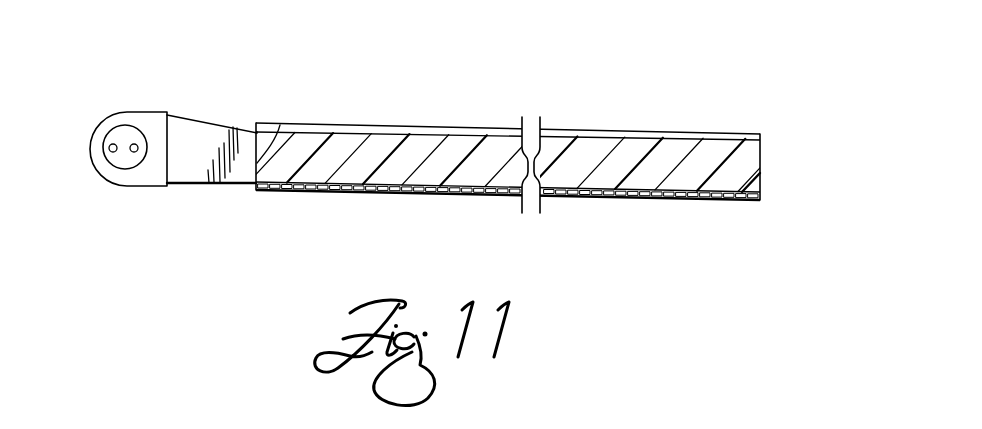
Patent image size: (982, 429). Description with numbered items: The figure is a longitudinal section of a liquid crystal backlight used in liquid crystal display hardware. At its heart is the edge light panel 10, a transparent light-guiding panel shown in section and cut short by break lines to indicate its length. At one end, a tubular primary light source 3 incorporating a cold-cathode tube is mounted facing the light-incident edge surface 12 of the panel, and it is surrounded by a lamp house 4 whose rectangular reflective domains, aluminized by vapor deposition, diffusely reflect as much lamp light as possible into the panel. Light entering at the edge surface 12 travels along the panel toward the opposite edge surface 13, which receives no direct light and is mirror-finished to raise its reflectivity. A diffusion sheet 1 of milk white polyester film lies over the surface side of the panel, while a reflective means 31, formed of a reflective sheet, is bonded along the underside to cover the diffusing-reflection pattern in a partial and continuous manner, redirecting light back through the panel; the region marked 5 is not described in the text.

The diffusion sheet 1 is at (405, 126).
The primary light source 3 is at (125, 158).
The lamp house 4 is at (150, 112).
The shank 5 is at (208, 168).
The edge light panel 10 is at (653, 204).
The light-incident edge surface 12 is at (280, 125).
The edge surface 13 is at (761, 177).
The reflective means 31 is at (402, 195).